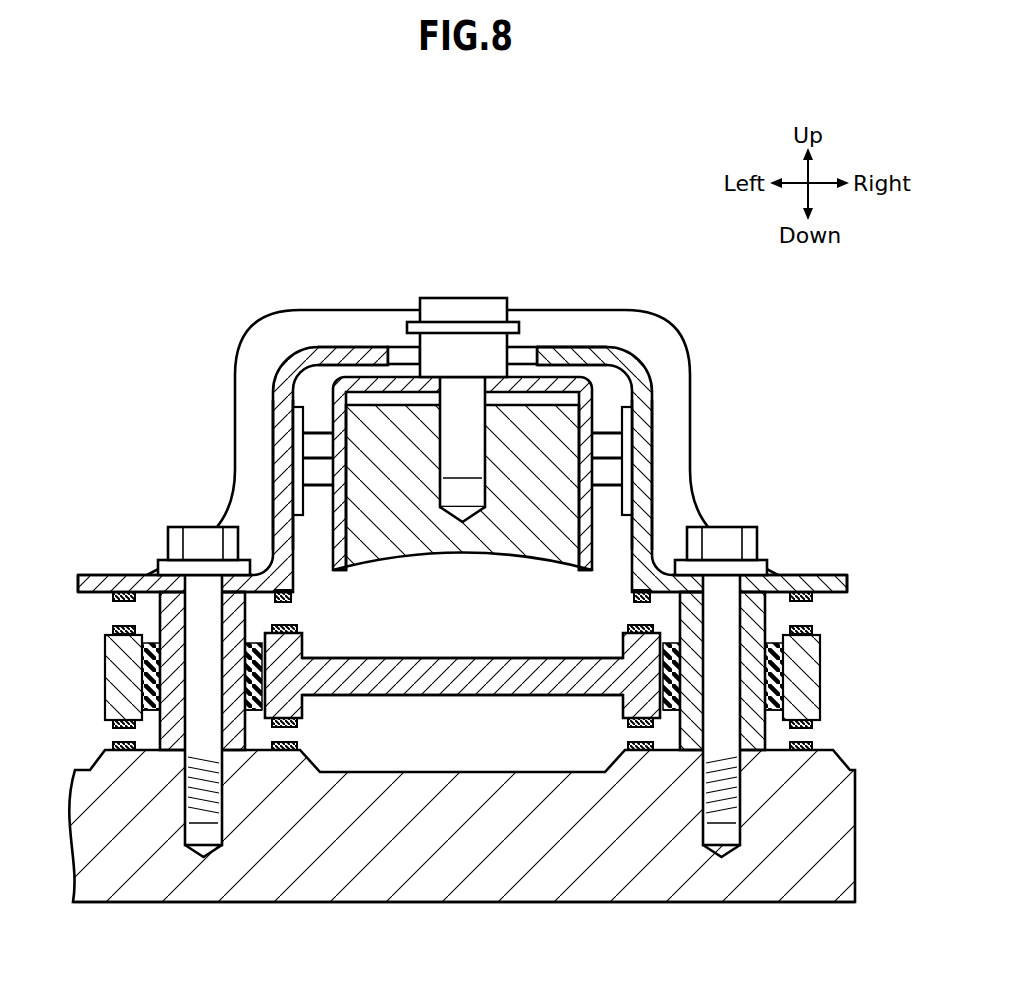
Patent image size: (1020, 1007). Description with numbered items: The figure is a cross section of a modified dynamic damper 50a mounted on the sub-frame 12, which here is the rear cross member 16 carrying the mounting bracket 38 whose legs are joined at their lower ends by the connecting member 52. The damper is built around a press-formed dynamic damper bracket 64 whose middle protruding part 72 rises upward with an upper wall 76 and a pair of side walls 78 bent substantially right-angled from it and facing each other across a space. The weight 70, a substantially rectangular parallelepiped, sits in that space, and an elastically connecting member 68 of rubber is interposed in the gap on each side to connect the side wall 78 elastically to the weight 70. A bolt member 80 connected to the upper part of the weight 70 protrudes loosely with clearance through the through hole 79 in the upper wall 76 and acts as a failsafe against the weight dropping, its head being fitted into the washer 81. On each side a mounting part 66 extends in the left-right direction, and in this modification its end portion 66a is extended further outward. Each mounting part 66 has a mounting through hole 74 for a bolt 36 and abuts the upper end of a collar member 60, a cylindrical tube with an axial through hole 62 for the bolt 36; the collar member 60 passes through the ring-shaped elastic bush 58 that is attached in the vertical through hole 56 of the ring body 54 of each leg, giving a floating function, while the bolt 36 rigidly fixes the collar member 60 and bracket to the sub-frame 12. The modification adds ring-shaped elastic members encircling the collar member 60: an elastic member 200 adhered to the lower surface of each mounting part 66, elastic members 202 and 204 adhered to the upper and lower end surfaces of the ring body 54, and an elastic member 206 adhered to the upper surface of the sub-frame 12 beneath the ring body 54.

The dynamic damper 50a is at (322, 336).
The dynamic damper bracket 64 is at (656, 423).
The elastically connecting member 68 is at (320, 438).
The protruding part 72 is at (573, 347).
The side wall 78 is at (280, 480).
The mounting part 66 is at (120, 580).
The end portion 66a is at (78, 584).
The upper wall 76 is at (385, 350).
The through hole 79 is at (528, 357).
The weight 70 is at (462, 560).
The bolt member 80 is at (462, 303).
The washer 81 is at (412, 328).
The sub-frame 12 is at (462, 885).
The rear cross member 16 is at (462, 885).
The mounting bracket 38 is at (432, 656).
The connecting member 52 is at (462, 678).
The collar member 60 is at (170, 615).
The mounting through hole 74 is at (250, 606).
The ring body 54 is at (105, 650).
The through hole 62 is at (150, 680).
The through hole 56 is at (150, 718).
The elastic bush 58 is at (262, 722).
The elastic member 200 is at (118, 597).
The elastic member 202 is at (118, 630).
The elastic member 204 is at (118, 724).
The elastic member 206 is at (118, 746).
The bolt 36 is at (205, 540).